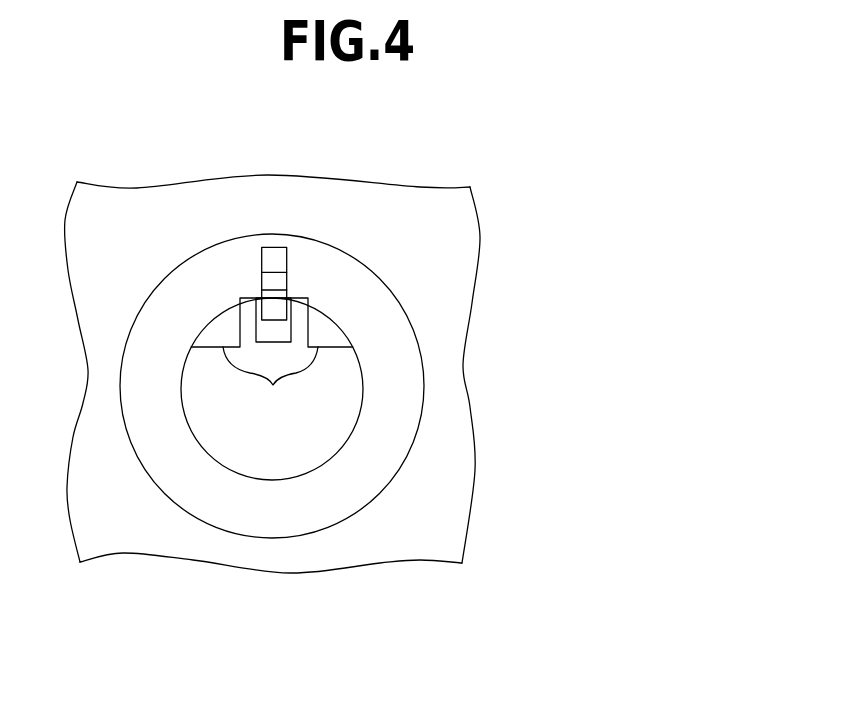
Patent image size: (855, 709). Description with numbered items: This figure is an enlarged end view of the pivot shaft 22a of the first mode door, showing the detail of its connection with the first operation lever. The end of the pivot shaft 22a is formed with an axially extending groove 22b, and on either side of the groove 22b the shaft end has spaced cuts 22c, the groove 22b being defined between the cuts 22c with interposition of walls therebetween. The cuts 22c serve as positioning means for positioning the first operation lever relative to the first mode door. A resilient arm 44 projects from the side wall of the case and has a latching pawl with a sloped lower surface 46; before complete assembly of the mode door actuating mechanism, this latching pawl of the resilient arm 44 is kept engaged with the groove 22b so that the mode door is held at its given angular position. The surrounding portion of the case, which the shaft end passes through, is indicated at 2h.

The through hole of base plate 2 2h is at (465, 267).
The pivot shaft 22a is at (330, 432).
The axially extending groove 22b is at (265, 329).
The spaced cuts 22c is at (281, 385).
The resilient arm 44 is at (287, 261).
The sloped lower surface 46 is at (277, 308).